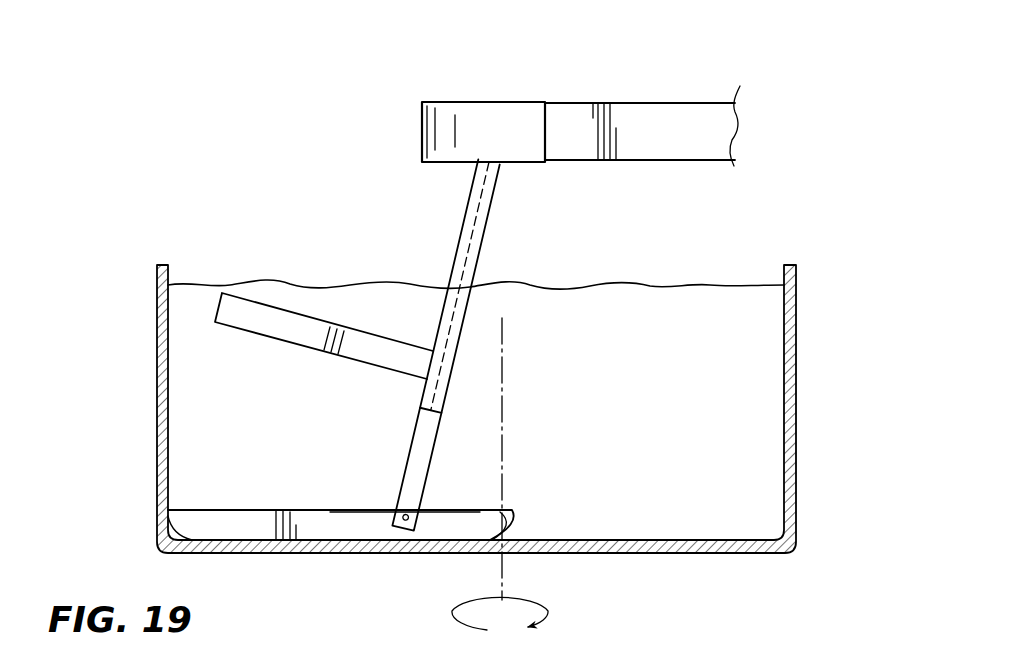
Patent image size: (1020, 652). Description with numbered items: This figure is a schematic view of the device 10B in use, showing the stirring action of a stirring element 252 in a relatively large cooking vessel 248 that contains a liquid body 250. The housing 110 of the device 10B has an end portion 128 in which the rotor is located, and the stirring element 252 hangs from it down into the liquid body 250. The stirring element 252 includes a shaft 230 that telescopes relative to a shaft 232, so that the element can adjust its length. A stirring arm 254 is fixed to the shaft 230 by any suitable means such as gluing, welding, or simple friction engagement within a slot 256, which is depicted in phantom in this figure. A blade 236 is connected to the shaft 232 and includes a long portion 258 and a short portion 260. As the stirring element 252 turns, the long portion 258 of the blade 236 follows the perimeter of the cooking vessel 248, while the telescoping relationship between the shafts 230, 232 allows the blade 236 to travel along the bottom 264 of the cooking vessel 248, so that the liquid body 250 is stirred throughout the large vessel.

The device 10B is at (375, 128).
The housing 110 is at (623, 118).
The end portion 128 is at (497, 115).
The shaft 230 is at (470, 197).
The shaft 232 is at (418, 462).
The blade 236 is at (232, 528).
The cooking vessel 248 is at (797, 389).
The liquid body 250 is at (669, 330).
The stirring element 252 is at (498, 238).
The stirring arm 254 is at (258, 313).
The slot 256 is at (490, 196).
The long portion 258 is at (330, 520).
The short portion 260 is at (508, 512).
The bottom 264 is at (548, 608).